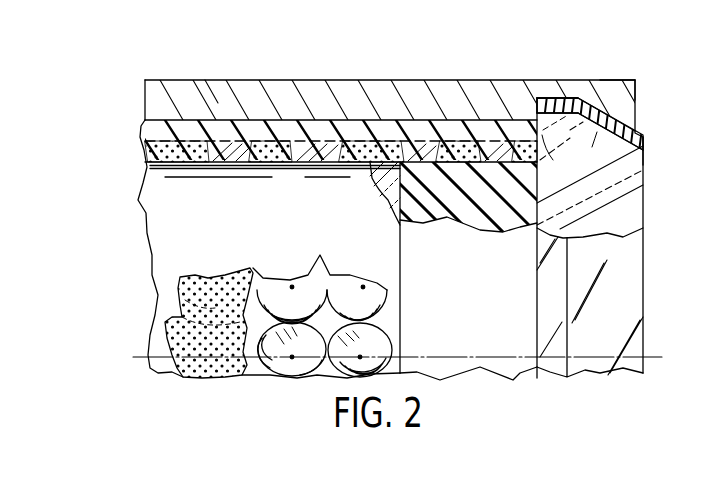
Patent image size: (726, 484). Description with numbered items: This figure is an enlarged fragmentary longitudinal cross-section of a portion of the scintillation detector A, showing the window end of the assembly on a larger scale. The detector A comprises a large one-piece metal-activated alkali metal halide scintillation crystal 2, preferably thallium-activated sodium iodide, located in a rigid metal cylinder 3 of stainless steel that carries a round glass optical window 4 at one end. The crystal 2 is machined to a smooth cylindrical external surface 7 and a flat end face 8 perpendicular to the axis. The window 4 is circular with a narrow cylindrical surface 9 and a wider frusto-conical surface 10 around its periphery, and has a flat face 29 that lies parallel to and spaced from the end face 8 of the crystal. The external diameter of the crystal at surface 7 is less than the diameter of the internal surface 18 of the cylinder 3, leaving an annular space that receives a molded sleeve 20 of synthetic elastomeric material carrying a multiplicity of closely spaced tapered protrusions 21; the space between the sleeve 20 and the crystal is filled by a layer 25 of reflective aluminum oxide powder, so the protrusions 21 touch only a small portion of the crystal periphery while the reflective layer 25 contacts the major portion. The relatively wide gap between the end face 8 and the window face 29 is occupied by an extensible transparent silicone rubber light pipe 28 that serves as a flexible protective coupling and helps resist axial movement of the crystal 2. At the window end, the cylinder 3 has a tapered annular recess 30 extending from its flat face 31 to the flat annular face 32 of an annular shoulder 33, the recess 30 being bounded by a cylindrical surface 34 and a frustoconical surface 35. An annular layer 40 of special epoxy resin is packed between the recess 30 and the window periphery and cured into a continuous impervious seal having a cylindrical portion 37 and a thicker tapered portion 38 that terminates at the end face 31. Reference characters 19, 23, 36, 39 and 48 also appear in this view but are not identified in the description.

The scintillation detector A is at (292, 58).
The scintillation crystal 2 is at (158, 235).
The cylinder 3 is at (400, 82).
The optical window 4 is at (652, 216).
The cylindrical external surface 7 is at (220, 90).
The flat end face 8 is at (402, 263).
The cylindrical surface 9 is at (555, 368).
The frusto-conical surface 10 is at (643, 122).
The internal surface 18 is at (143, 133).
The intermediate layer 19 is at (472, 128).
The sleeve 20 is at (339, 120).
The protrusions 21 is at (240, 163).
The particle contact point 23 is at (293, 168).
The layer of aluminum oxide powder 25 is at (203, 280).
The light pipe 28 is at (482, 365).
The flat face of the optical window 29 is at (537, 320).
The tapered annular recess 30 is at (600, 98).
The flat face of the cylinder 31 is at (640, 90).
The flat annular face 32 is at (550, 102).
The annular shoulder 33 is at (530, 110).
The cylindrical surface 34 is at (570, 100).
The frustoconical surface 35 is at (589, 146).
The seal line 36 is at (558, 159).
The cylindrical portion 37 is at (567, 113).
The tapered portion 38 is at (644, 150).
The lower housing portion 39 is at (645, 260).
The annular layer of epoxy resin composition 40 is at (638, 119).
The stippled fingers 48 is at (490, 150).